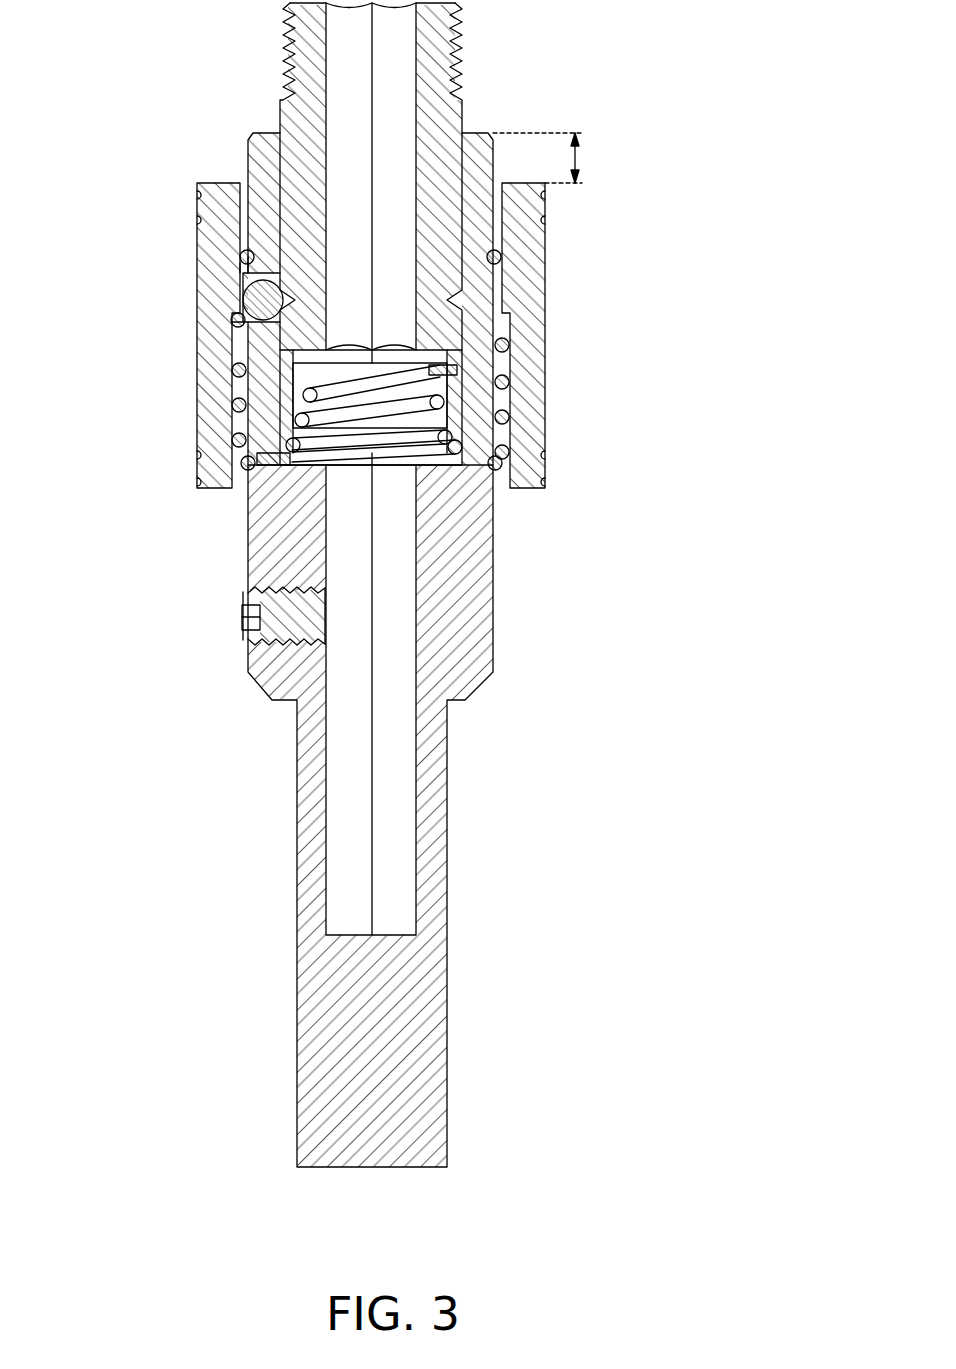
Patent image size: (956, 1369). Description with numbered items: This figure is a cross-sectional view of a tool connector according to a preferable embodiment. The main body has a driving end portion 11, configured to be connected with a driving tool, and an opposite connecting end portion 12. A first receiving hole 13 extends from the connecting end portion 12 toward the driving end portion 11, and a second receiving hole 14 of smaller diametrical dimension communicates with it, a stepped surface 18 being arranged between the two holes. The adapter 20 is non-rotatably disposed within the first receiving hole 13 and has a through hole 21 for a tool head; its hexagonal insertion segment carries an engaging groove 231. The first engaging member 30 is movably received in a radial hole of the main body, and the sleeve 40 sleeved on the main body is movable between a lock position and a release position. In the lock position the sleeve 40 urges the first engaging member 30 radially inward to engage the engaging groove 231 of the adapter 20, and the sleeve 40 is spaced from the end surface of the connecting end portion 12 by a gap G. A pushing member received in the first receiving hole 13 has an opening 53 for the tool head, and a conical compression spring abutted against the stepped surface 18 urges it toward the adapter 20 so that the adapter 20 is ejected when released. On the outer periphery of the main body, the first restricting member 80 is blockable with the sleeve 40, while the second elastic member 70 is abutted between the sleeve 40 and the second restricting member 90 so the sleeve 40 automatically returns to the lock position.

The driving end portion 11 is at (281, 1117).
The connecting end portion 12 is at (226, 145).
The first receiving hole 13 is at (287, 435).
The second receiving hole 14 is at (345, 763).
The stepped surface 18 is at (280, 446).
The adapter 20 is at (288, 118).
The through hole 21 is at (395, 52).
The first engaging member 30 is at (253, 298).
The sleeve 40 is at (523, 332).
The opening 53 is at (343, 360).
The second elastic member 70 is at (509, 414).
The first restricting member 80 is at (500, 255).
The second restricting member 90 is at (502, 465).
The engaging groove 231 is at (290, 292).
The gap G is at (577, 158).